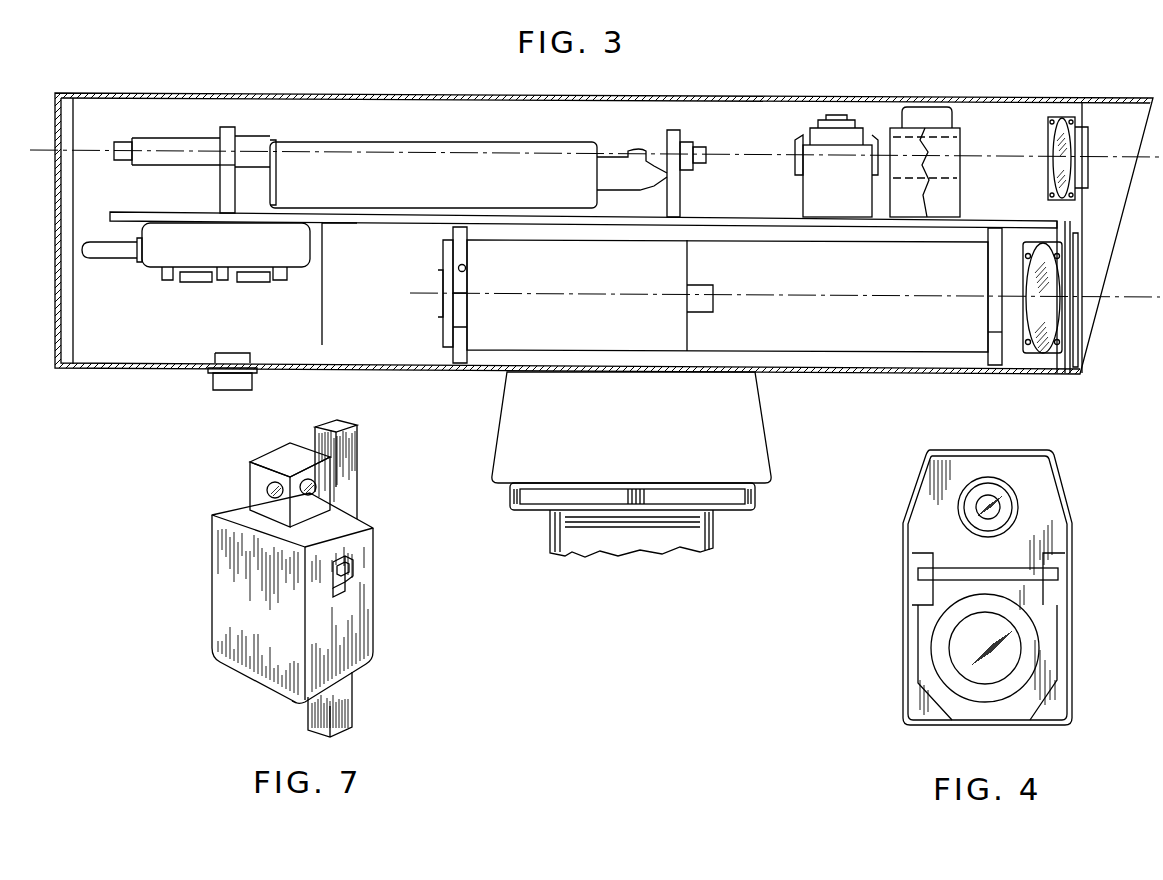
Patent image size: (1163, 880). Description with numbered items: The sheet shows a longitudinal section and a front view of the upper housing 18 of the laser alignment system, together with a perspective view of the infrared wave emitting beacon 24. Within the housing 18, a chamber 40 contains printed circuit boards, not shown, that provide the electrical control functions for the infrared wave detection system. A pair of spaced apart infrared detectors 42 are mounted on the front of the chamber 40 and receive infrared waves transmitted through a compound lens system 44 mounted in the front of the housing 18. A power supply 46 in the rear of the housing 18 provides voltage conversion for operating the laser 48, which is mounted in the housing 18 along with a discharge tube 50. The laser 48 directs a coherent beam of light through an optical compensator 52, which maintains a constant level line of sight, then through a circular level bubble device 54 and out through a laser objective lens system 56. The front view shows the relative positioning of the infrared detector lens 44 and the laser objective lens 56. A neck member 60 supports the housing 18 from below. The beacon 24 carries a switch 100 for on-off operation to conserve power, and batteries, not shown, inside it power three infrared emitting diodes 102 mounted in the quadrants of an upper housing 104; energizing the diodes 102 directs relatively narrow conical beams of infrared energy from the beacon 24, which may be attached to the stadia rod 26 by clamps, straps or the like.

In FIG. 3, the housing 18 is at (765, 97).
In FIG. 4, the housing 18 is at (1003, 450).
In FIG. 7, the infrared wave emitting beacon 24 is at (246, 639).
In FIG. 7, the stadia rod 26 is at (326, 414).
In FIG. 3, the chamber 40 is at (503, 317).
In FIG. 3, the infrared detectors 42 is at (692, 283).
In FIG. 3, the compound lens system 44 is at (1050, 290).
In FIG. 4, the compound lens system 44 is at (993, 667).
In FIG. 3, the power supply 46 is at (237, 256).
In FIG. 3, the laser 48 is at (147, 140).
In FIG. 3, the discharge tube 50 is at (460, 190).
In FIG. 3, the optical compensator 52 is at (847, 196).
In FIG. 3, the circular level bubble device 54 is at (920, 115).
In FIG. 3, the laser objective lens system 56 is at (1060, 130).
In FIG. 4, the laser objective lens system 56 is at (998, 520).
In FIG. 3, the neck member 60 is at (702, 450).
In FIG. 7, the switch 100 is at (350, 580).
In FIG. 7, the infrared emitting diodes 102 is at (268, 500).
In FIG. 7, the upper housing 104 is at (293, 458).